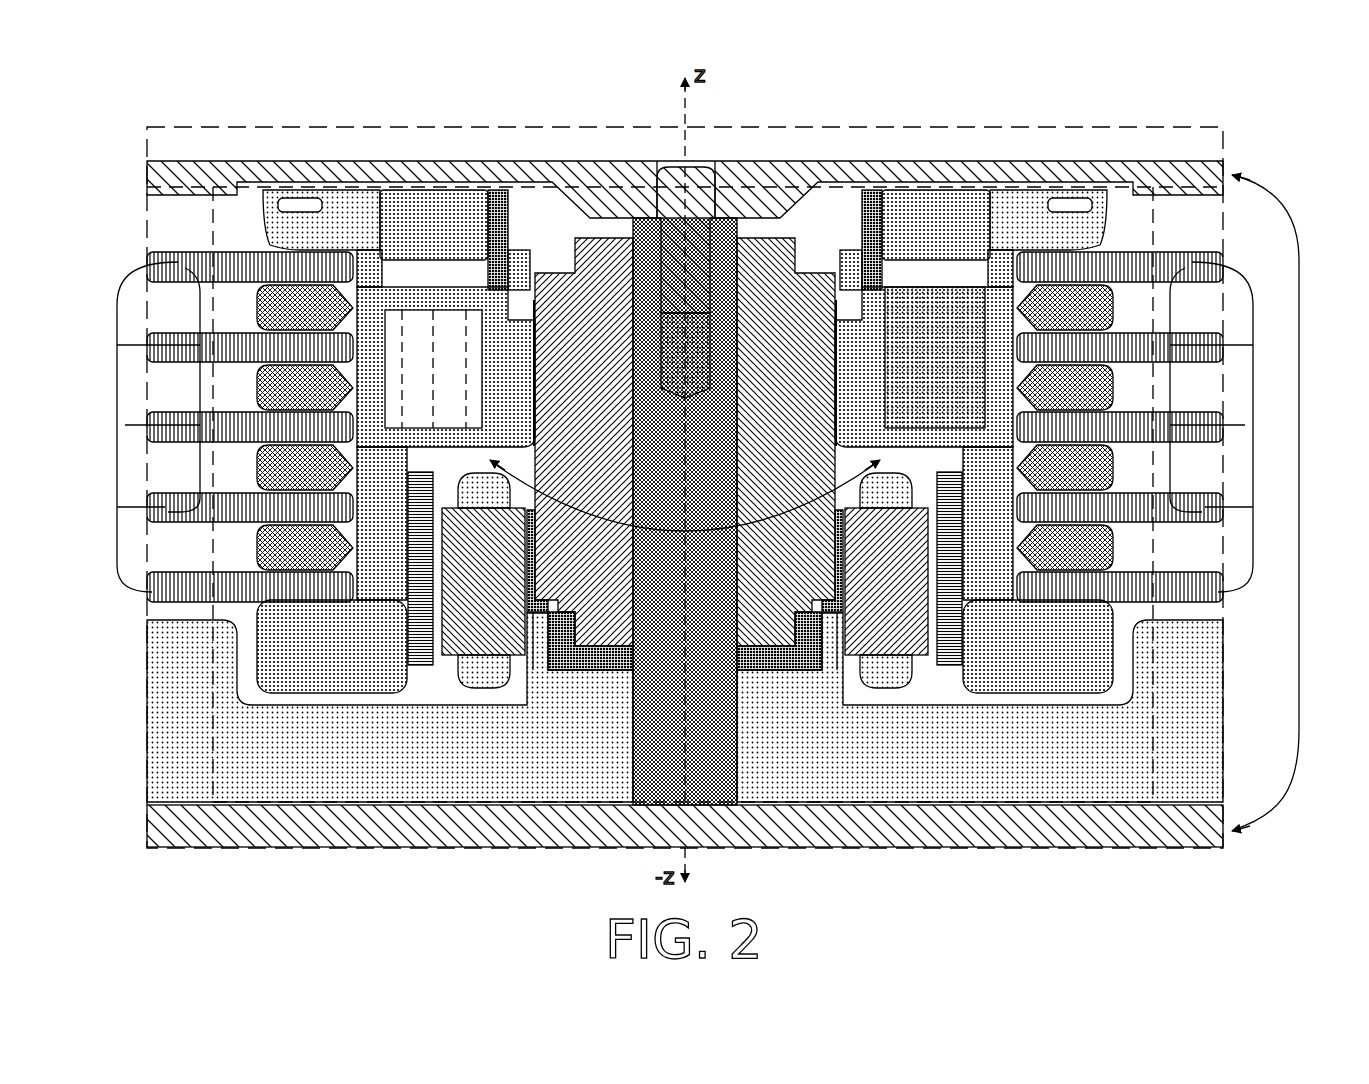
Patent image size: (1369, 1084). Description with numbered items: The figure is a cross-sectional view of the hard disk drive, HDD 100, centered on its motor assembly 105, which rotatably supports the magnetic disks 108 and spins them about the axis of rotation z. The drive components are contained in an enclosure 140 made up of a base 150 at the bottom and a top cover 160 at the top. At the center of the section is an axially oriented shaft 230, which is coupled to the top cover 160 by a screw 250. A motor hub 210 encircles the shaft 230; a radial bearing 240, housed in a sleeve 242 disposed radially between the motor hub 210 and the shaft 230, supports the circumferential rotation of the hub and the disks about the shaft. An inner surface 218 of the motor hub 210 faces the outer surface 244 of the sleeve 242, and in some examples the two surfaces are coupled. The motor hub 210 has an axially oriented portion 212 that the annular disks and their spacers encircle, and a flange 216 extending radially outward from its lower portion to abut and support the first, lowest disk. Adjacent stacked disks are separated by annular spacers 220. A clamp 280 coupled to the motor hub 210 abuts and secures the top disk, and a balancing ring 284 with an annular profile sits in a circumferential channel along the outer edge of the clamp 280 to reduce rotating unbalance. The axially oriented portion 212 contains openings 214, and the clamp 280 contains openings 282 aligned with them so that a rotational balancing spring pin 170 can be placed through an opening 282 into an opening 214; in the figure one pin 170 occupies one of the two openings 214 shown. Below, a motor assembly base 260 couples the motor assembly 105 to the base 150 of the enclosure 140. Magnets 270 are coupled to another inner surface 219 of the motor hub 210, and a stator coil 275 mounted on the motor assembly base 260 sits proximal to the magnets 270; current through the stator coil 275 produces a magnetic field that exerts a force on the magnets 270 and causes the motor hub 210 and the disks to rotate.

The HDD 100 is at (190, 88).
The motor assembly 105 is at (207, 233).
The magnetic disks 108 is at (685, 427).
The enclosure 140 is at (1296, 503).
The base 150 is at (566, 840).
The top cover 160 is at (1185, 178).
The rotational balancing spring pin 170 is at (459, 378).
The motor hub 210 is at (640, 500).
The axially oriented portion 212 is at (375, 505).
The openings 214 is at (512, 300).
The flange 216 is at (305, 665).
The inner surface 218 is at (536, 355).
The inner surface 219 is at (418, 470).
The spacer 220 is at (322, 322).
The shaft 230 is at (712, 461).
The radial bearing 240 is at (632, 545).
The sleeve 242 is at (608, 572).
The outer surface 244 is at (533, 348).
The screw 250 is at (700, 172).
The motor assembly base 260 is at (595, 765).
The magnets 270 is at (420, 668).
The stator coil 275 is at (535, 640).
The clamp 280 is at (360, 205).
The openings 282 is at (455, 215).
The balancing ring 284 is at (302, 205).